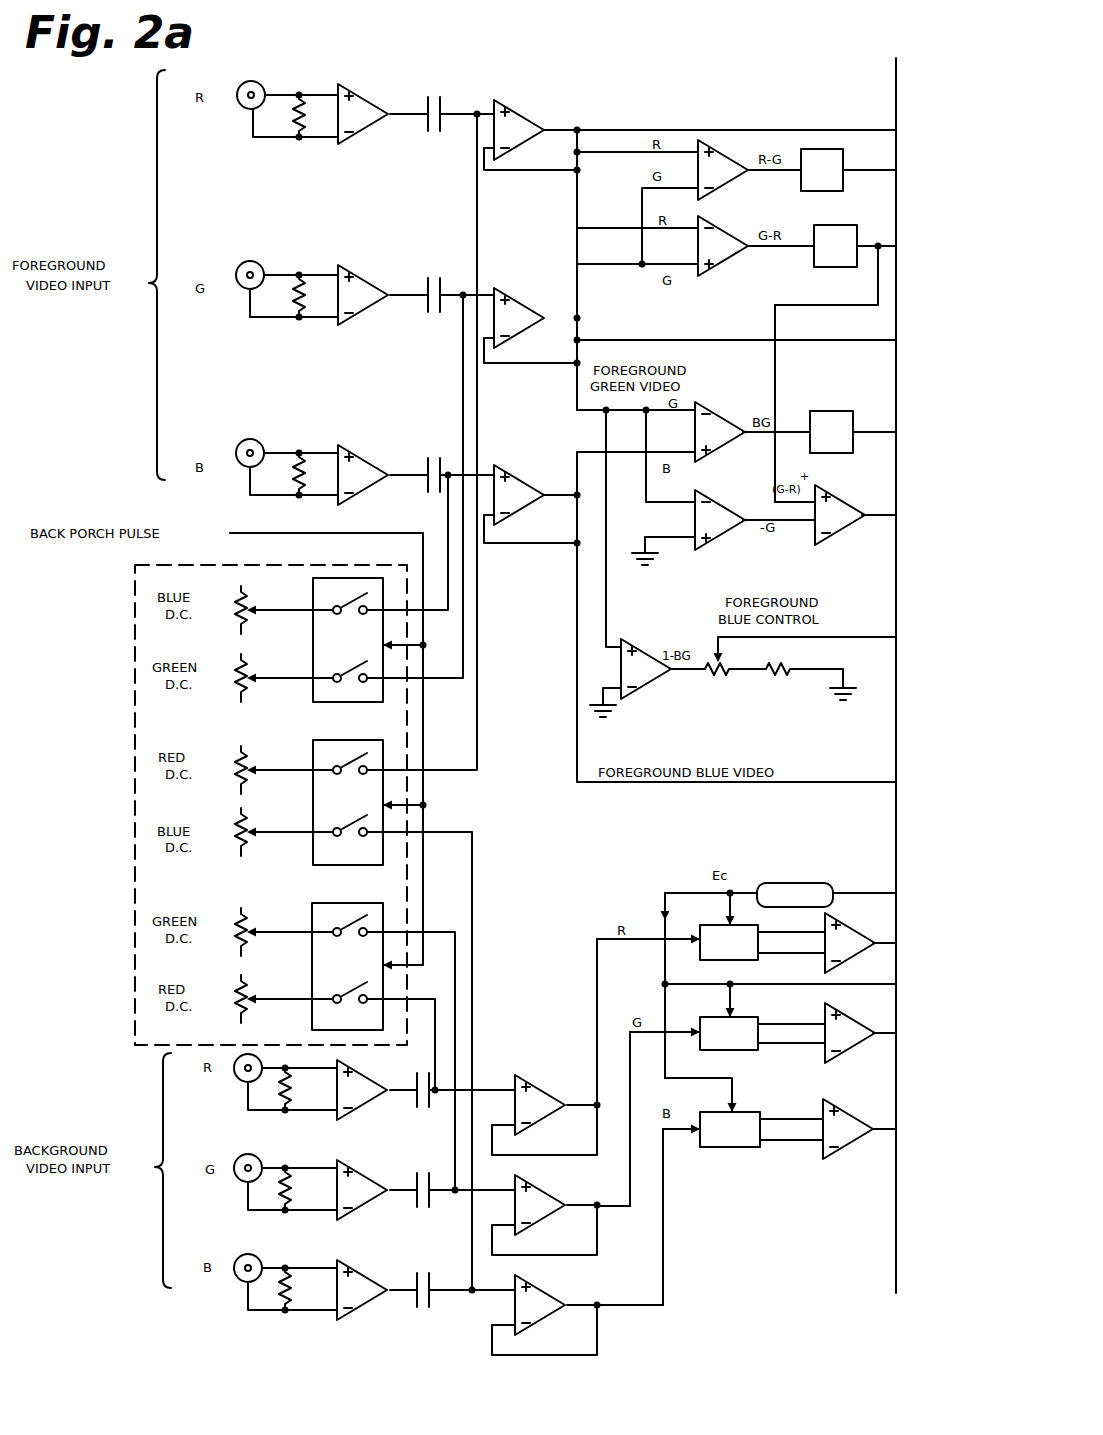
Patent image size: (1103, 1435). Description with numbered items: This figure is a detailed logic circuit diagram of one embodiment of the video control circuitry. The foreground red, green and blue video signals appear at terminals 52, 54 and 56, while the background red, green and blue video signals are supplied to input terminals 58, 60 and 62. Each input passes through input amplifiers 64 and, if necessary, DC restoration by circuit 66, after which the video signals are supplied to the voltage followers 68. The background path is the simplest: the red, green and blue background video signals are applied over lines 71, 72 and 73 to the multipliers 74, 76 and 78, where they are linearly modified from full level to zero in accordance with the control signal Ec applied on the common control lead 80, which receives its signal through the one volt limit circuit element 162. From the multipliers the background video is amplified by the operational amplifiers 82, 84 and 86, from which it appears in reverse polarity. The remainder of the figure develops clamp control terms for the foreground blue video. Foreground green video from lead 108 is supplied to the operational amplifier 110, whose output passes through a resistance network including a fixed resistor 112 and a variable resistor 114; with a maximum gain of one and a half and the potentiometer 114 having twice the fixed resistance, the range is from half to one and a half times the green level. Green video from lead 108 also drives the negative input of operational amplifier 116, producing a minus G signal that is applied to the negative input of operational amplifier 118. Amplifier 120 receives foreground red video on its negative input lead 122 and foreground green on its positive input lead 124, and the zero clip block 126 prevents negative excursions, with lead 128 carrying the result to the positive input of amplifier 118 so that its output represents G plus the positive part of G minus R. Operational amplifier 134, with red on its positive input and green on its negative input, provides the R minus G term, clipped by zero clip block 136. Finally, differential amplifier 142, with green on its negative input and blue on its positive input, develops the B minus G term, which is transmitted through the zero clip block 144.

The red foreground video input terminal 52 is at (260, 80).
The green foreground video input terminal 54 is at (250, 261).
The blue foreground video input terminal 56 is at (250, 439).
The red background video input terminal 58 is at (240, 1080).
The green background video input terminal 60 is at (240, 1180).
The blue background video input terminal 62 is at (240, 1282).
The input amplifier 64 is at (366, 98).
The DC restoration circuit 66 is at (135, 795).
The voltage follower 68 is at (522, 112).
The red background video line 71 is at (597, 944).
The green background video line 72 is at (630, 1058).
The blue background video line 73 is at (663, 1272).
The red multiplier 74 is at (720, 962).
The green multiplier 76 is at (740, 1050).
The blue multiplier 78 is at (732, 1148).
The common control lead 80 is at (678, 893).
The red background operational amplifier 82 is at (836, 964).
The green background operational amplifier 84 is at (850, 1050).
The blue background operational amplifier 86 is at (845, 1150).
The foreground green video lead 108 is at (577, 395).
The operational amplifier 110 is at (650, 690).
The fixed resistor 112 is at (775, 676).
The variable resistor 114 is at (718, 676).
The operational amplifier 116 is at (730, 540).
The operational amplifier 118 is at (838, 533).
The operational amplifier 120 is at (735, 272).
The negative input lead 122 is at (600, 228).
The positive input lead 124 is at (612, 268).
The zero clip block 126 is at (832, 270).
The lead 128 is at (775, 378).
The operational amplifier 134 is at (725, 140).
The zero clip block 136 is at (825, 149).
The differential amplifier 142 is at (740, 448).
The zero clip block 144 is at (852, 453).
The one volt limit circuit element 162 is at (805, 883).